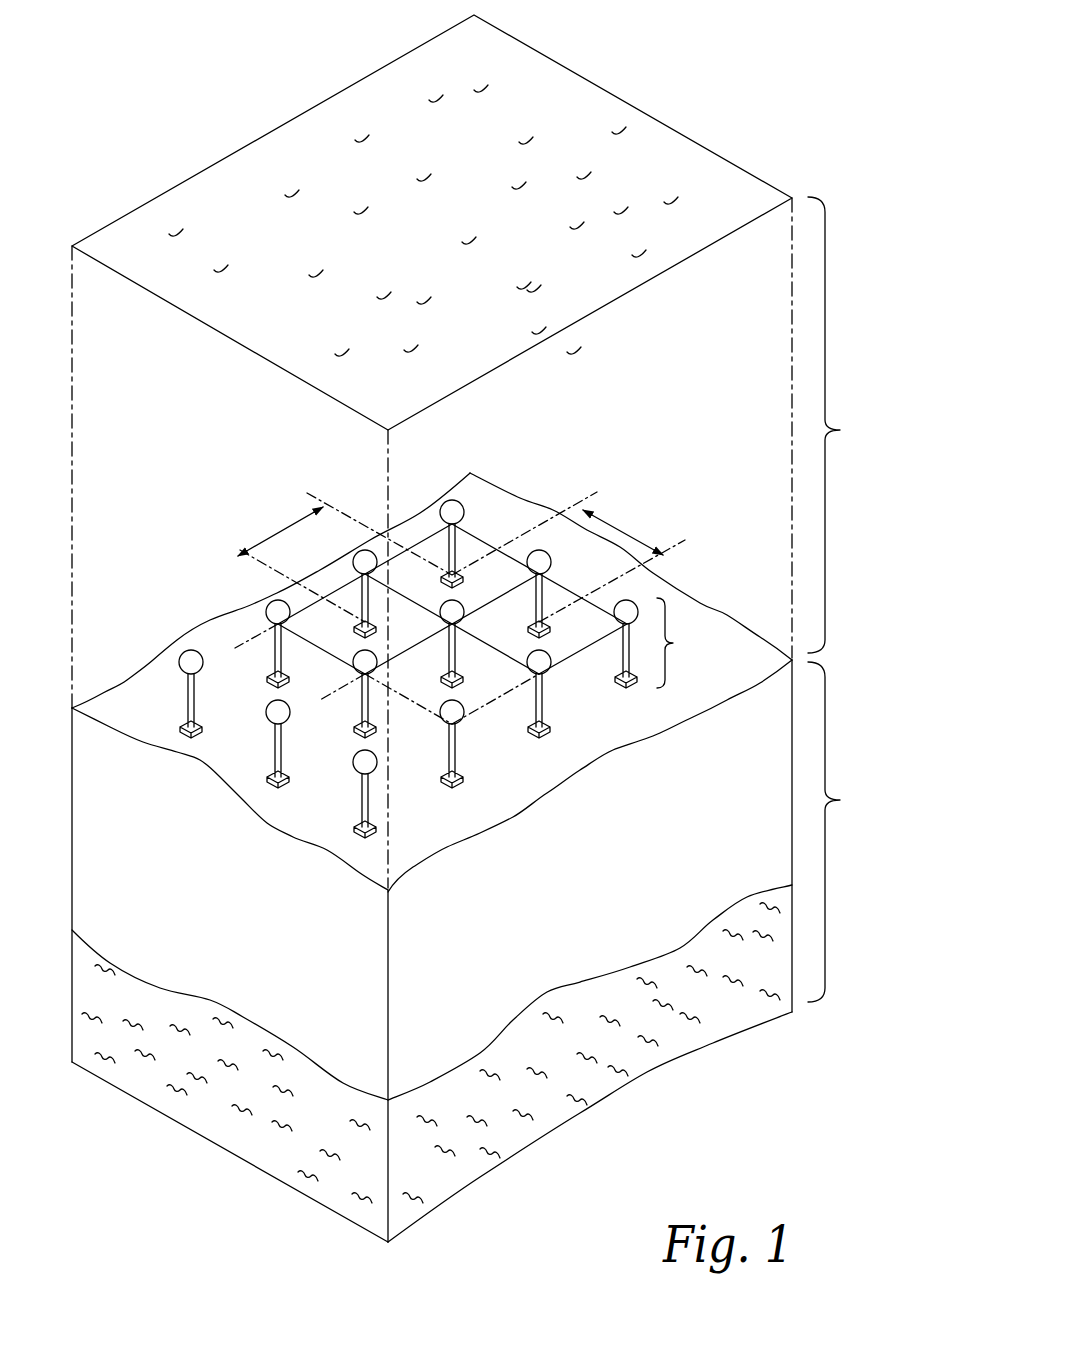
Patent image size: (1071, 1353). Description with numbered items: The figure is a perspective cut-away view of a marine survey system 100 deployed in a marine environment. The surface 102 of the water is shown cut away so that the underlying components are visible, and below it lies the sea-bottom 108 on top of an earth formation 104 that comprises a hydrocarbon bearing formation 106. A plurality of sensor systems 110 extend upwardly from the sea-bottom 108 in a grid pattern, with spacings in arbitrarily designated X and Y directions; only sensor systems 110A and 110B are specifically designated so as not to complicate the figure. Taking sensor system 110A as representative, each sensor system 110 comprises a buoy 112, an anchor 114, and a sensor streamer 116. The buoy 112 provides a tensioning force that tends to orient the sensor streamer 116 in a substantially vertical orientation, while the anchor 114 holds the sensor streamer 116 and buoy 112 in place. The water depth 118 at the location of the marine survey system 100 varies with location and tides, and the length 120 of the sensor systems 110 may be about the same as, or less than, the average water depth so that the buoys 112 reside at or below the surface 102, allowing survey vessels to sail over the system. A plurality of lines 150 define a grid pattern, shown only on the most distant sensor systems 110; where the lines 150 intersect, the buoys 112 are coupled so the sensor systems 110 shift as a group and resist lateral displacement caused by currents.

The marine survey system 100 is at (272, 38).
The surface of the water 102 is at (285, 140).
The earth formation 104 is at (484, 951).
The hydrocarbon bearing formation 106 is at (657, 1063).
The sea-bottom 108 is at (207, 616).
The sensor systems 110 is at (176, 683).
The sensor system 110A is at (373, 791).
The sensor system 110B is at (461, 745).
The buoy 112 is at (355, 757).
The anchor 114 is at (358, 835).
The sensor streamer 116 is at (358, 795).
The water depth 118 is at (484, 542).
The length of the sensor systems 120 is at (668, 643).
The lines 150 is at (482, 538).